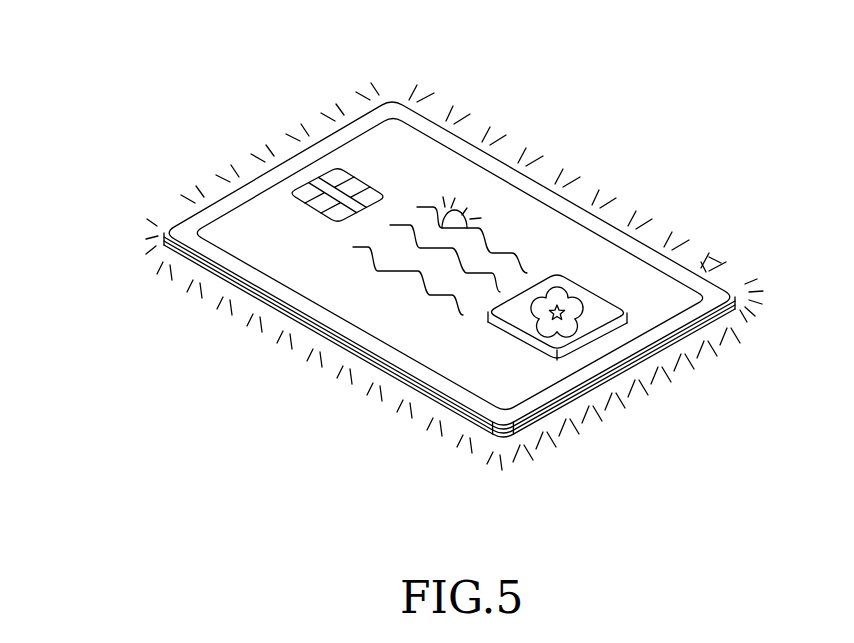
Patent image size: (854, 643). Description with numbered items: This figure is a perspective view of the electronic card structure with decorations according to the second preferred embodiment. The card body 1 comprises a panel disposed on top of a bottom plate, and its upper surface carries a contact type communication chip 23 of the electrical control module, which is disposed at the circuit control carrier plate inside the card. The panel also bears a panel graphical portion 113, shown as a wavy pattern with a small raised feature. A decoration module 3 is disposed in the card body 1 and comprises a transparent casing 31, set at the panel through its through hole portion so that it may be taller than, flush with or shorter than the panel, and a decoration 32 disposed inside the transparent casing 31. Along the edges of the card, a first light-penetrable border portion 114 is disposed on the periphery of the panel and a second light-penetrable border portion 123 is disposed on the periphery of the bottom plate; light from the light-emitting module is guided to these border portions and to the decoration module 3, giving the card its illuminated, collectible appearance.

The card body 1 is at (690, 259).
The first light-penetrable border portion 114 is at (703, 312).
The second light-penetrable border portion 123 is at (482, 430).
The contact type communication chip 23 is at (322, 183).
The panel graphical portion 113 is at (449, 210).
The decoration module 3 is at (612, 350).
The transparent casing 31 is at (540, 268).
The decoration 32 is at (568, 330).